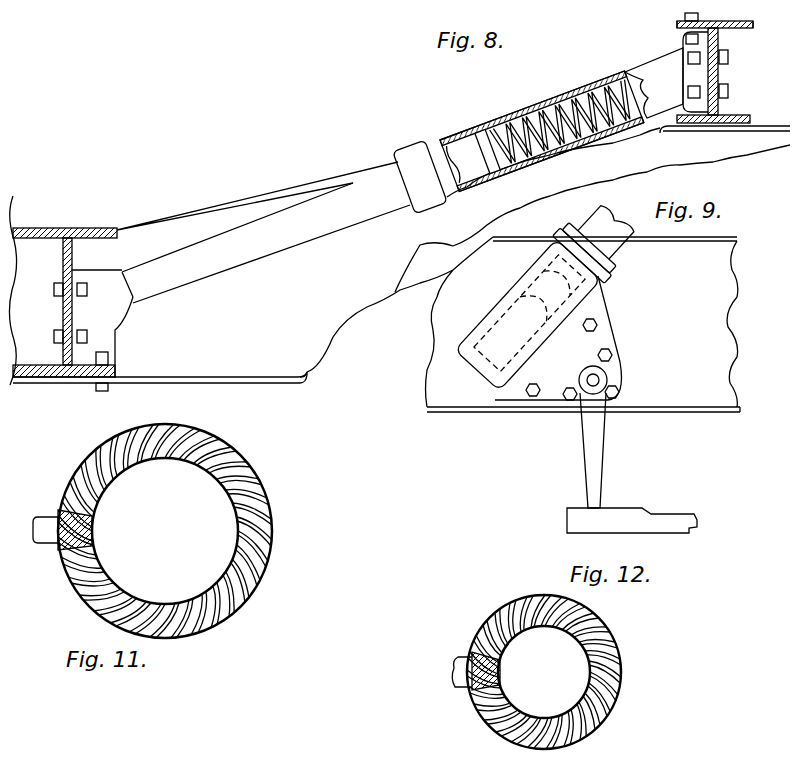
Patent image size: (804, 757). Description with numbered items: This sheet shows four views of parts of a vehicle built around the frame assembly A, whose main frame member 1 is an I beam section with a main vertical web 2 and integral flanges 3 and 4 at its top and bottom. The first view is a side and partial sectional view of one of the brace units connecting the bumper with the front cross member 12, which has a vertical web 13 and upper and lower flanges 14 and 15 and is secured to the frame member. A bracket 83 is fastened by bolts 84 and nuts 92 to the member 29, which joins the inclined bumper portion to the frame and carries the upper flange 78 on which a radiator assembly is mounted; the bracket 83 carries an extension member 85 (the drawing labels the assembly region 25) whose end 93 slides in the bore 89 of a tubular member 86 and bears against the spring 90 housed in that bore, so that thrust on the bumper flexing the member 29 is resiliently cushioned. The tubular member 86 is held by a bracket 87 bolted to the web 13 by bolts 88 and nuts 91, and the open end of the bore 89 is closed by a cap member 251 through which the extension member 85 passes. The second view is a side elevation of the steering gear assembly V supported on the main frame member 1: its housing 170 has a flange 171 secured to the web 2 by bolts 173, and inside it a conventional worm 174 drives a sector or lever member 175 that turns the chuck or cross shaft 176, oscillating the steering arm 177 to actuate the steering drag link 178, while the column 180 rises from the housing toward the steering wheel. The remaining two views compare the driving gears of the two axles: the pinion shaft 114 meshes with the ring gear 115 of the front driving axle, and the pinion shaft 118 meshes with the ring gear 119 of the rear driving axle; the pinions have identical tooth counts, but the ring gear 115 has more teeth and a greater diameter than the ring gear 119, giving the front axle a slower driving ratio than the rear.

In FIG. 8, the main frame member 1 is at (172, 384).
In FIG. 9, the main frame member 1 is at (738, 372).
In FIG. 8, the main vertical web 2 is at (335, 322).
In FIG. 9, the main vertical web 2 is at (737, 298).
In FIG. 8, the flange 3 is at (752, 126).
In FIG. 8, the flange 4 is at (300, 382).
In FIG. 9, the flange 4 is at (735, 412).
In FIG. 8, the front cross member 12 is at (677, 22).
In FIG. 8, the vertical web 13 is at (720, 72).
In FIG. 9, the vertical web 13 is at (737, 238).
In FIG. 8, the upper flange 14 is at (753, 25).
In FIG. 8, the lower flange 15 is at (750, 116).
In FIG. 8, the arm 25 is at (243, 199).
In FIG. 8, the member 29 is at (35, 186).
In FIG. 8, the upper flange 78 is at (76, 229).
In FIG. 8, the bracket 83 is at (116, 340).
In FIG. 8, the bolts 84 is at (88, 336).
In FIG. 8, the extension member 85 is at (223, 270).
In FIG. 8, the tubular member 86 is at (523, 112).
In FIG. 8, the bracket 87 is at (683, 36).
In FIG. 8, the bolts 88 is at (698, 16).
In FIG. 8, the bore 89 is at (452, 140).
In FIG. 8, the spring 90 is at (600, 76).
In FIG. 8, the nuts 91 is at (700, 90).
In FIG. 8, the nuts 92 is at (54, 289).
In FIG. 8, the end 93 is at (480, 133).
In FIG. 11, the pinion shaft 114 is at (42, 545).
In FIG. 11, the ring gear 115 is at (244, 605).
In FIG. 12, the pinion shaft 118 is at (468, 690).
In FIG. 12, the ring gear 119 is at (612, 710).
In FIG. 9, the housing 170 is at (500, 300).
In FIG. 9, the flange 171 is at (605, 306).
In FIG. 9, the bolts 173 is at (612, 353).
In FIG. 9, the worm 174 is at (497, 330).
In FIG. 9, the sector or lever member 175 is at (571, 343).
In FIG. 9, the chuck or cross shaft 176 is at (607, 378).
In FIG. 9, the steering arm 177 is at (605, 466).
In FIG. 9, the steering drag link 178 is at (680, 512).
In FIG. 9, the column 180 is at (618, 203).
In FIG. 8, the cap member 251 is at (398, 152).
In FIG. 8, the frame assembly A is at (92, 226).
In FIG. 9, the frame assembly A is at (737, 323).
In FIG. 9, the steering gear assembly V is at (578, 250).